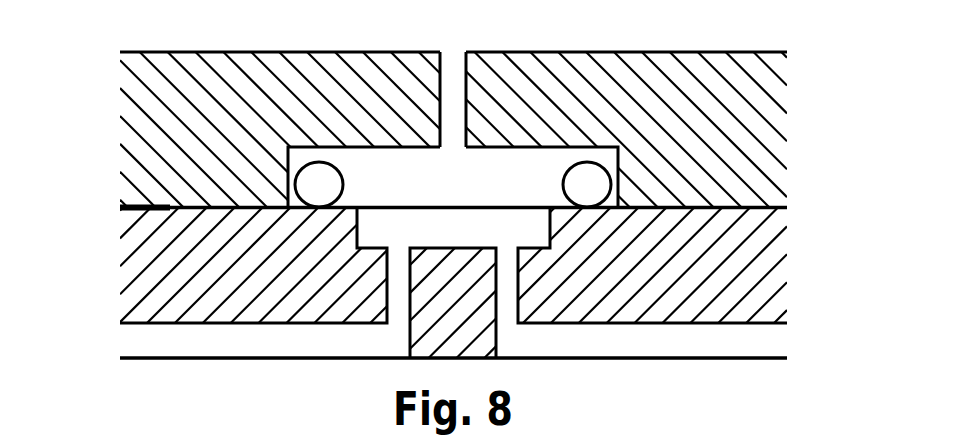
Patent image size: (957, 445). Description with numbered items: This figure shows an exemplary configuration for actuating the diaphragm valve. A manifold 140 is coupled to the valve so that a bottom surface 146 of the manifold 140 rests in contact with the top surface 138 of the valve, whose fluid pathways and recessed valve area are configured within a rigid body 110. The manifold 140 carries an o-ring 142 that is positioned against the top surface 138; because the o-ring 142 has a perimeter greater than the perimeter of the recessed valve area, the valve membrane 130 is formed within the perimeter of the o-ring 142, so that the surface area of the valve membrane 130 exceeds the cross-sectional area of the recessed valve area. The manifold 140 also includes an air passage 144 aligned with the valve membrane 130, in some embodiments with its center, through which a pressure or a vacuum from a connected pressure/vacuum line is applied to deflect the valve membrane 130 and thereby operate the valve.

The rigid body 110 is at (800, 210).
The valve membrane 130 is at (457, 206).
The top surface 138 is at (150, 211).
The manifold 140 is at (800, 52).
The o-ring 142 is at (587, 178).
The air passage 144 is at (453, 62).
The bottom surface 146 is at (159, 205).